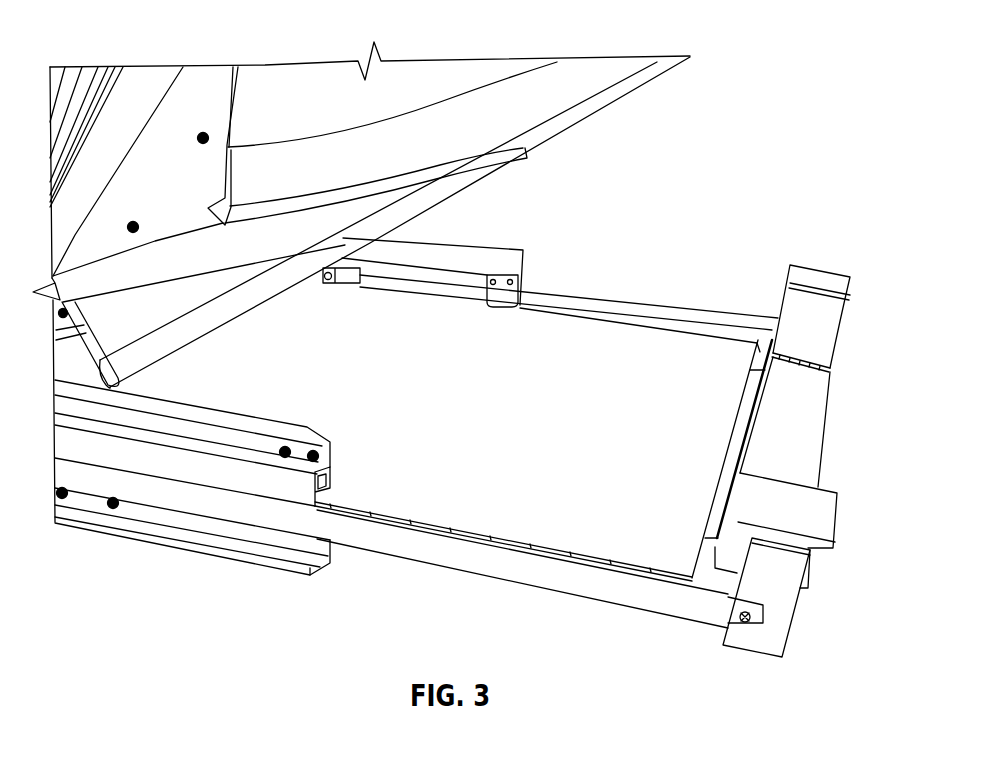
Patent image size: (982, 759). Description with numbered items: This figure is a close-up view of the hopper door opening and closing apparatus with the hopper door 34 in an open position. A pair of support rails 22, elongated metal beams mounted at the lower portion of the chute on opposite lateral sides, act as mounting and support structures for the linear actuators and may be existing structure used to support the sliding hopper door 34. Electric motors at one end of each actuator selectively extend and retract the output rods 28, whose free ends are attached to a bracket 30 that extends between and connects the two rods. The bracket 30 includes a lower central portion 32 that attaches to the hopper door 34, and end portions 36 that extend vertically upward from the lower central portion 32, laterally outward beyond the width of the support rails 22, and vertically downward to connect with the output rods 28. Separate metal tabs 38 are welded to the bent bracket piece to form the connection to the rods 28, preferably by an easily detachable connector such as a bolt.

The support rails 22 is at (510, 252).
The output rods 28 is at (604, 304).
The hopper door 34 is at (640, 340).
The end portions 36 is at (826, 338).
The bracket 30 is at (813, 402).
The lower central portion 32 is at (812, 470).
The metal tabs 38 is at (767, 645).